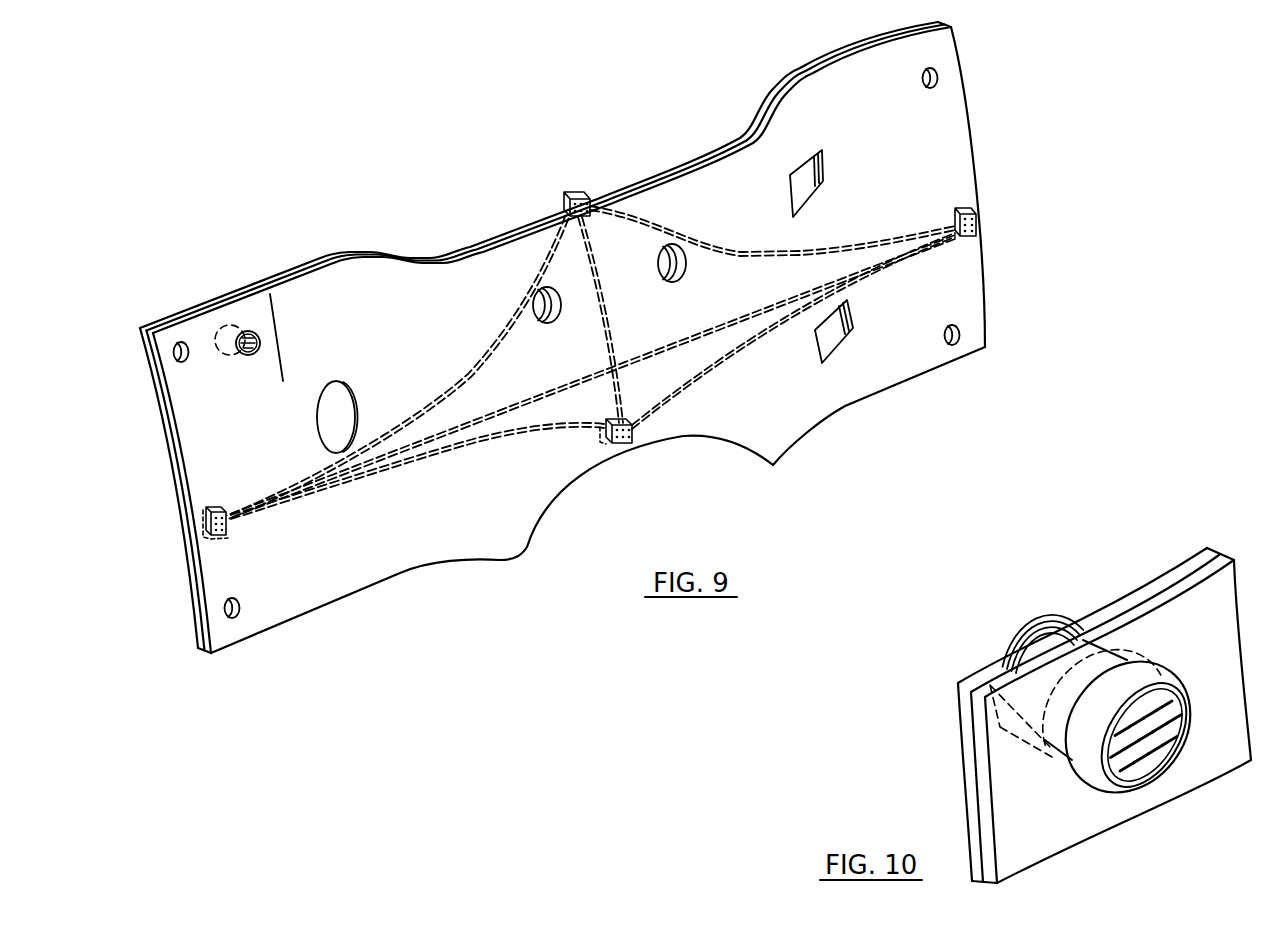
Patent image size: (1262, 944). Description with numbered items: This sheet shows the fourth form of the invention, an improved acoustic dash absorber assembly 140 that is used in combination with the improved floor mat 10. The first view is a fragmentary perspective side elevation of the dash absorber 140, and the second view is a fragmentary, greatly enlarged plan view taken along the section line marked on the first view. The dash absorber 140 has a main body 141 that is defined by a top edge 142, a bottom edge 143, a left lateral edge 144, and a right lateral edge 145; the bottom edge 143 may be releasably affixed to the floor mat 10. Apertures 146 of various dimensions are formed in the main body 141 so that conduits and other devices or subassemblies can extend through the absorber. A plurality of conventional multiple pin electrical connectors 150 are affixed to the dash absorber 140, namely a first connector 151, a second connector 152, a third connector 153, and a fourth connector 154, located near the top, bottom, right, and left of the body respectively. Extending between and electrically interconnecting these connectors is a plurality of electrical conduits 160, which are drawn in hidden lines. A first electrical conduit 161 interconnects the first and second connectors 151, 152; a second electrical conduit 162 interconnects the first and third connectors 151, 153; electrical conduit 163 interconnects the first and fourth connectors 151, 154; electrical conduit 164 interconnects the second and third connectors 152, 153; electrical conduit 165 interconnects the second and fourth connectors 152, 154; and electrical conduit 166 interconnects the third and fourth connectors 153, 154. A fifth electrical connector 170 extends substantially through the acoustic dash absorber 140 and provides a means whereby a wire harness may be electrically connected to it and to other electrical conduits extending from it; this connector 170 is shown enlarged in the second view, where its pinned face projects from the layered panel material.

In FIG. 9, the floor mat 10 is at (294, 371).
In FIG. 9, the acoustic dash absorber assembly 140 is at (672, 140).
In FIG. 9, the main body 141 is at (867, 90).
In FIG. 9, the top edge 142 is at (645, 180).
In FIG. 9, the bottom edge 143 is at (898, 388).
In FIG. 9, the left lateral edge 144 is at (180, 458).
In FIG. 9, the right lateral edge 145 is at (980, 175).
In FIG. 9, the apertures 146 is at (334, 416).
In FIG. 9, the multiple pin electrical connectors 150 is at (600, 330).
In FIG. 9, the first connector 151 is at (573, 197).
In FIG. 9, the second connector 152 is at (628, 443).
In FIG. 9, the third connector 153 is at (978, 213).
In FIG. 9, the fourth connector 154 is at (205, 525).
In FIG. 9, the electrical conduits 160 is at (591, 355).
In FIG. 9, the first electrical conduit 161 is at (602, 276).
In FIG. 9, the second electrical conduit 162 is at (765, 247).
In FIG. 9, the electrical conduit 163 is at (497, 345).
In FIG. 9, the electrical conduit 164 is at (758, 335).
In FIG. 9, the electrical conduit 165 is at (507, 438).
In FIG. 9, the electrical conduit 166 is at (583, 375).
In FIG. 9, the fifth electrical connector 170 is at (247, 325).
In FIG. 10, the fifth electrical connector 170 is at (1055, 606).